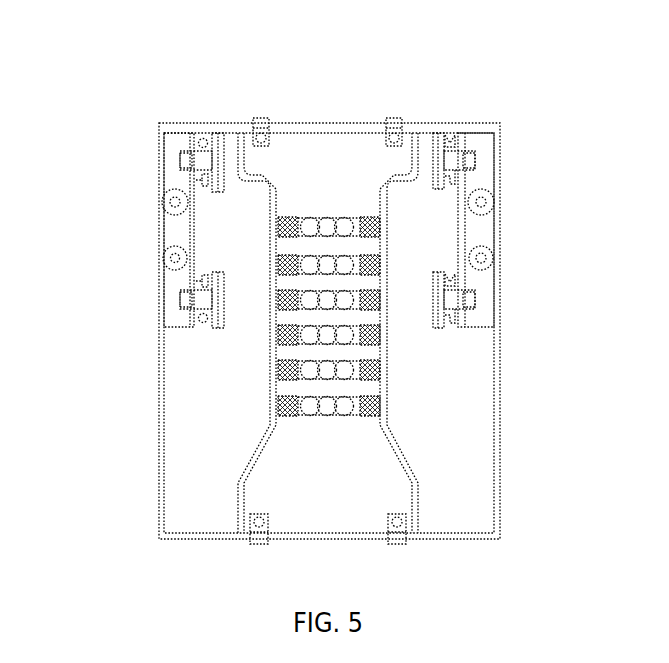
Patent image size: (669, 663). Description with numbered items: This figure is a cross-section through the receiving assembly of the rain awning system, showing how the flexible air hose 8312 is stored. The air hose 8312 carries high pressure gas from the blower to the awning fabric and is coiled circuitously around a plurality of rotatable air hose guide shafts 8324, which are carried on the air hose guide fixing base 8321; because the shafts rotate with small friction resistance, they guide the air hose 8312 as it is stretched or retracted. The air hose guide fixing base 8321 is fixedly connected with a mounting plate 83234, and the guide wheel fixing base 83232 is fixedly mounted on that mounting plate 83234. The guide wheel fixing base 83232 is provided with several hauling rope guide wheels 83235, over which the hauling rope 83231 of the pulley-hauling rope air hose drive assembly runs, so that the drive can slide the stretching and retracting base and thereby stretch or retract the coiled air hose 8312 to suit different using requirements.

The air hose 8312 is at (334, 217).
The air hose guide fixing base 8321 is at (272, 237).
The air hose guide shafts 8324 is at (352, 247).
The hauling rope 83231 is at (596, 352).
The guide wheel fixing base 83232 is at (166, 190).
The mounting plate 83234 is at (236, 122).
The hauling rope guide wheels 83235 is at (192, 330).